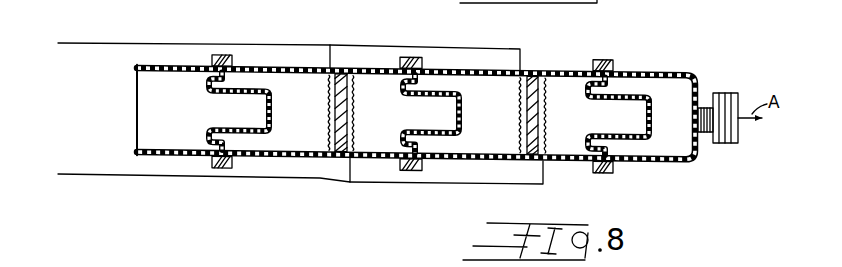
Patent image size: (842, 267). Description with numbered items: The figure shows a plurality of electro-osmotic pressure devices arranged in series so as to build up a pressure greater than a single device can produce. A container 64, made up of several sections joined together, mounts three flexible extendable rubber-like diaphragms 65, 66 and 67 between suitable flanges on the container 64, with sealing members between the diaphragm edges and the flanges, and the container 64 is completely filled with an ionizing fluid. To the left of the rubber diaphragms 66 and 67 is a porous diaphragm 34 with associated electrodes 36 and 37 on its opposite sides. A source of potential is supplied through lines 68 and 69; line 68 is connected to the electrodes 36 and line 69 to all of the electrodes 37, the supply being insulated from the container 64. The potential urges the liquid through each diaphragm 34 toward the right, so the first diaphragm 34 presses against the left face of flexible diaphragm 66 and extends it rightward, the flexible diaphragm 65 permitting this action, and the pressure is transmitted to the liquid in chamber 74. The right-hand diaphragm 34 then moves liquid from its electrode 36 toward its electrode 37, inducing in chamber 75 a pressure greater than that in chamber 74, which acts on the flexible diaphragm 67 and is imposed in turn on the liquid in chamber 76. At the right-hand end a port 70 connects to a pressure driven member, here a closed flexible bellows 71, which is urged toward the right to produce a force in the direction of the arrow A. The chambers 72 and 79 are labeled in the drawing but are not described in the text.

The diaphragm 34 is at (343, 137).
The electrode 36 is at (329, 91).
The electrode 37 is at (354, 106).
The container 64 is at (288, 160).
The flexible extendable rubber-like diaphragm 65 is at (260, 108).
The flexible extendable rubber-like diaphragm 66 is at (461, 110).
The flexible extendable rubber-like diaphragm 67 is at (652, 116).
The line 68 is at (72, 40).
The line 69 is at (79, 174).
The port 70 is at (707, 106).
The flexible bellows 71 is at (728, 144).
The chamber 72 is at (320, 113).
The chamber 74 is at (510, 118).
The chamber 75 is at (602, 119).
The chamber 76 is at (696, 110).
The chamber 79 is at (409, 121).